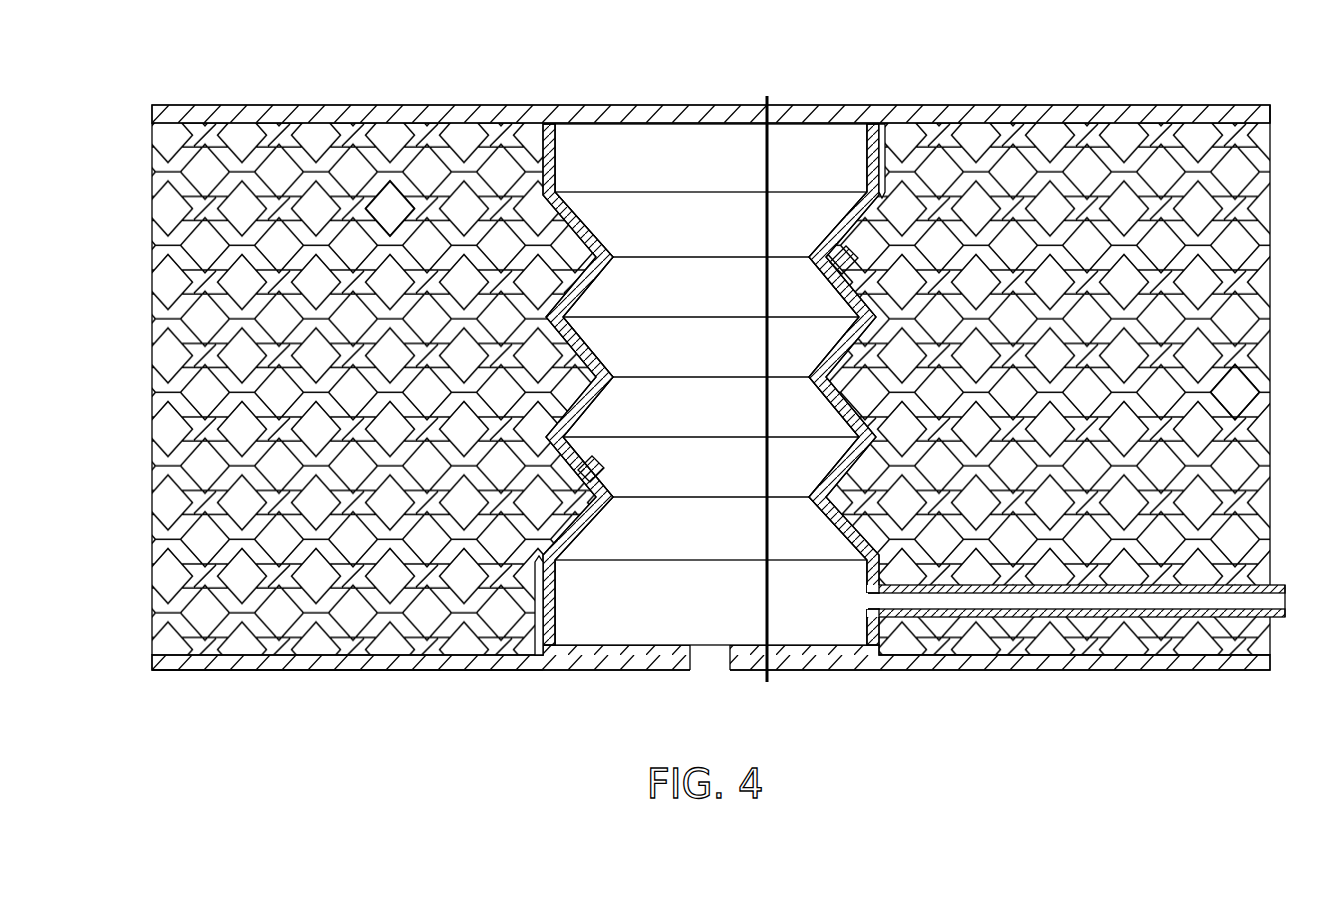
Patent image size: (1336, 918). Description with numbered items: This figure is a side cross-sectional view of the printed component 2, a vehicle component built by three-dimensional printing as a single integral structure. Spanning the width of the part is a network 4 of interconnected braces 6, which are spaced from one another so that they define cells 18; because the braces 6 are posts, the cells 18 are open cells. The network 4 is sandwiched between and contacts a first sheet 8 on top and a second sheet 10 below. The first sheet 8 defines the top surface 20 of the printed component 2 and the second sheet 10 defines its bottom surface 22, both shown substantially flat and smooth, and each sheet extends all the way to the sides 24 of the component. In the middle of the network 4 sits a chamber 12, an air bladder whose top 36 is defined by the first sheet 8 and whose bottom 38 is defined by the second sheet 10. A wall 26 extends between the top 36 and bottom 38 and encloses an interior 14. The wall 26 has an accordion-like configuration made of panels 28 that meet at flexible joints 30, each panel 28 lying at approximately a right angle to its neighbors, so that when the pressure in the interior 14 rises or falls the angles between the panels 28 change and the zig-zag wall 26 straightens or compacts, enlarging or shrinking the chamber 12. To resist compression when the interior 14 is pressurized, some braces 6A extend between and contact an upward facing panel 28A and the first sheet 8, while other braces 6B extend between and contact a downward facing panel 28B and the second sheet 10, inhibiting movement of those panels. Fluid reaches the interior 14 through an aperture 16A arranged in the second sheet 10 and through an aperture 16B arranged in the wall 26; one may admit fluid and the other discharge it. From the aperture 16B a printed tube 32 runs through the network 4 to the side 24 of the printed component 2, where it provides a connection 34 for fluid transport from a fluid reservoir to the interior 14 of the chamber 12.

The printed component 2 is at (266, 46).
The network 4 is at (129, 131).
The interconnected braces 6 is at (345, 612).
The braces 6A is at (953, 188).
The braces 6B is at (538, 565).
The first sheet 8 is at (1020, 106).
The second sheet 10 is at (1000, 652).
The chamber 12 is at (555, 167).
The interior 14 is at (703, 349).
The aperture 16A is at (710, 662).
The aperture 16B is at (855, 595).
The cells 18 is at (385, 200).
The top surface 20 is at (1222, 92).
The bottom surface 22 is at (450, 672).
The sides 24 is at (147, 408).
The wall 26 is at (598, 352).
The panels 28 is at (733, 547).
The upward facing panel 28A is at (840, 280).
The downward facing panel 28B is at (585, 478).
The flexible joints 30 is at (650, 316).
The tube 32 is at (1170, 616).
The connection 34 is at (1298, 596).
The top 36 is at (610, 112).
The bottom 38 is at (818, 664).